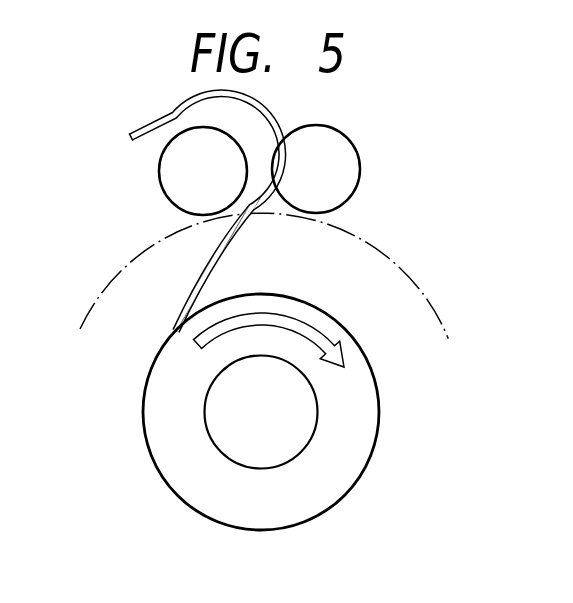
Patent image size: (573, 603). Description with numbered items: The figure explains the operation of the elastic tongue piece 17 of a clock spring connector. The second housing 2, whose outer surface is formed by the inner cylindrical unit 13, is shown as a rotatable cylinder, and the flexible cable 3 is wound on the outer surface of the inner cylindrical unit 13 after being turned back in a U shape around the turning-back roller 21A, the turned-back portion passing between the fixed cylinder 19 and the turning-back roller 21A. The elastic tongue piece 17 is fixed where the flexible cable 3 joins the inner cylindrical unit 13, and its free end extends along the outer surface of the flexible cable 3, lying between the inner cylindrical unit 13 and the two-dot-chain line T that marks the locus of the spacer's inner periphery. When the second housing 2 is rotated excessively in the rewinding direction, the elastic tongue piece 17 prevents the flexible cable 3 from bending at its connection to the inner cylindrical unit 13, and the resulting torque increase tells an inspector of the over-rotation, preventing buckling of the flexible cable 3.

The second housing 2 is at (362, 403).
The flexible cable 3 is at (218, 262).
The inner cylindrical unit 13 is at (143, 393).
The elastic tongue piece 17 is at (184, 291).
The fixed cylinder 19 is at (347, 167).
The turning-back roller 21A is at (160, 164).
The locus of the inner periphery of the spacer T is at (400, 268).